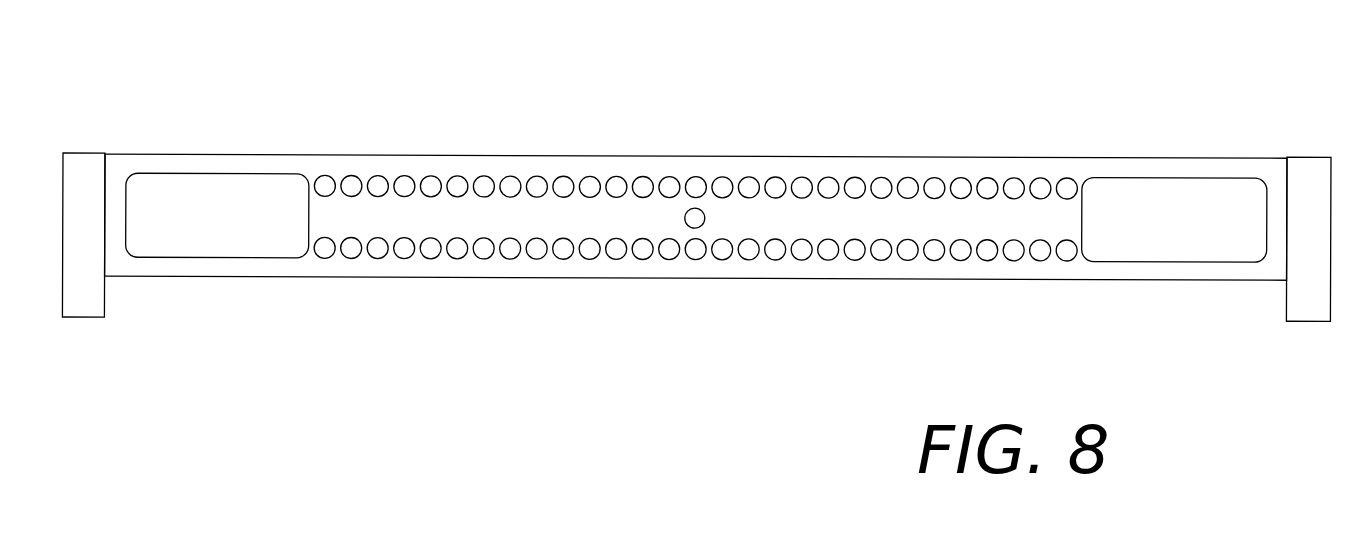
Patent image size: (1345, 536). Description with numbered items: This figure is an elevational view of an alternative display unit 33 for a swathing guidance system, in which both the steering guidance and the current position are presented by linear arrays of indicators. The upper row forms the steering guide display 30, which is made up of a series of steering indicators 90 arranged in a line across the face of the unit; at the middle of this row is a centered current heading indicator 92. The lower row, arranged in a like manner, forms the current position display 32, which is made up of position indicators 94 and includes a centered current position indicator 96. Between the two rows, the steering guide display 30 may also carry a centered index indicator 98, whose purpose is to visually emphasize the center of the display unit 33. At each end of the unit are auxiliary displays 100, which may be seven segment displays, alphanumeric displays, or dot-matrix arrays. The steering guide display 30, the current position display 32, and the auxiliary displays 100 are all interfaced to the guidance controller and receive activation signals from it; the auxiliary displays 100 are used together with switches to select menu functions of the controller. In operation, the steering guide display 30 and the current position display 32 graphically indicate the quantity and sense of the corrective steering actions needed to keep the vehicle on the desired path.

The display unit 33 is at (279, 45).
The steering guide display 30 is at (509, 168).
The current position display 32 is at (431, 266).
The steering indicators 90 is at (856, 180).
The current heading indicator 92 is at (697, 183).
The position indicators 94 is at (908, 247).
The current position indicator 96 is at (696, 247).
The index indicator 98 is at (706, 218).
The auxiliary displays 100 is at (252, 246).